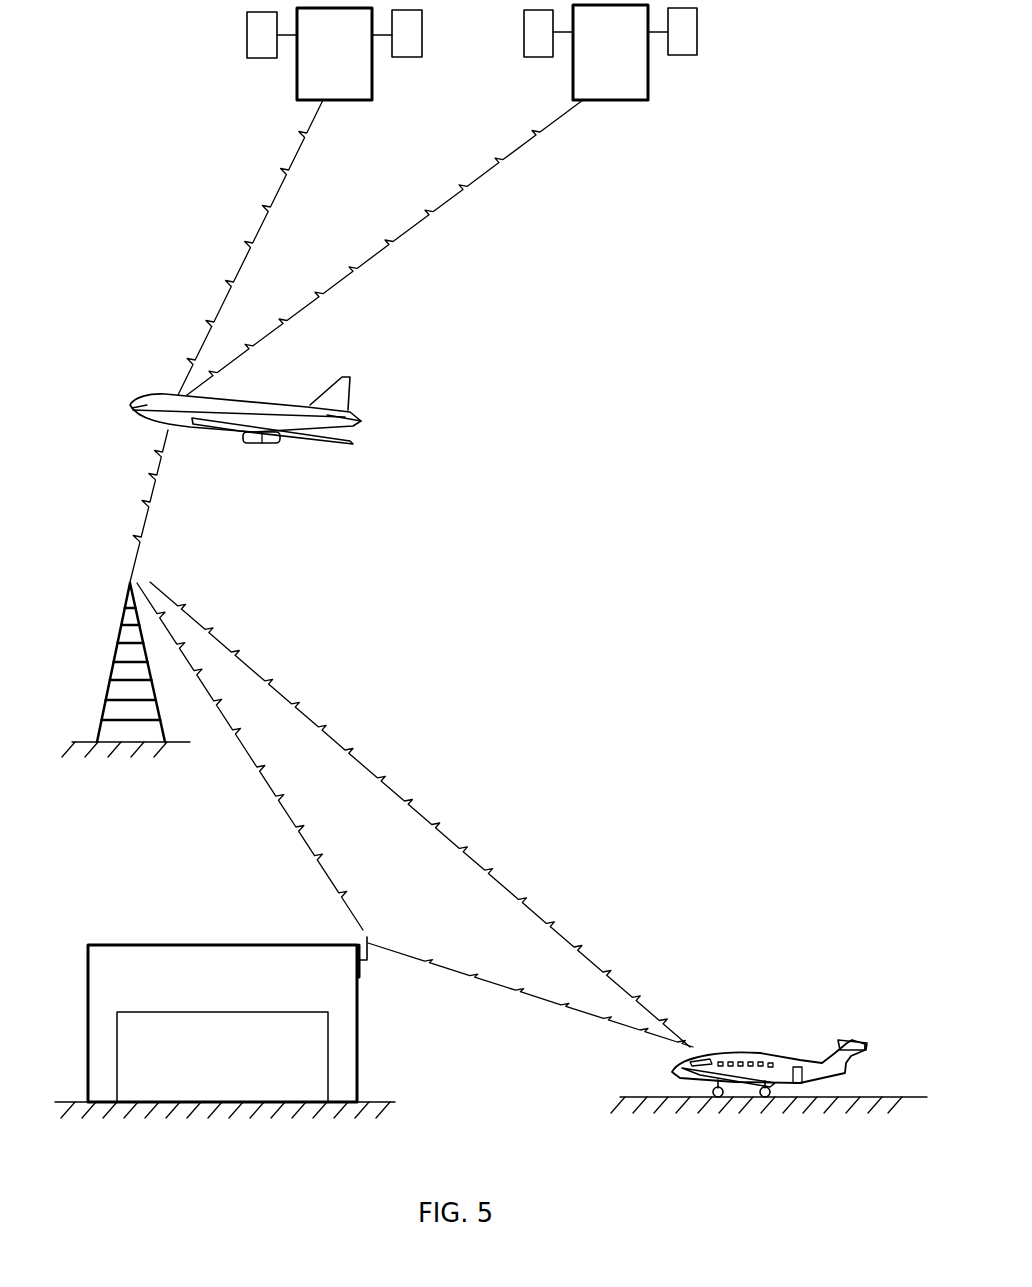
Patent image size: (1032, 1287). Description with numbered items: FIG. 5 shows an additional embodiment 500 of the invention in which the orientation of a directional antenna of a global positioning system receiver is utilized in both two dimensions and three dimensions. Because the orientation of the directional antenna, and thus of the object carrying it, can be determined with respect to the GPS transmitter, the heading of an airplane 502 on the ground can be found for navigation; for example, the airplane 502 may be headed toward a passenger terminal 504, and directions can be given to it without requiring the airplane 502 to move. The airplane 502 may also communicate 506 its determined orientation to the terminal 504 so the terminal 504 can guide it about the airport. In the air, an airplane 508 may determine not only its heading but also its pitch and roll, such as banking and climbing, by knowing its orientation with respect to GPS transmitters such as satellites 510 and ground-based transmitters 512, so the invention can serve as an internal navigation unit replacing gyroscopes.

The additional embodiment 500 is at (739, 384).
The airplane 502 is at (863, 1043).
The passenger terminal 504 is at (357, 1034).
The communication 506 is at (398, 950).
The airplane 508 is at (360, 410).
The satellites 510 is at (372, 91).
The ground-based transmitters 512 is at (113, 650).